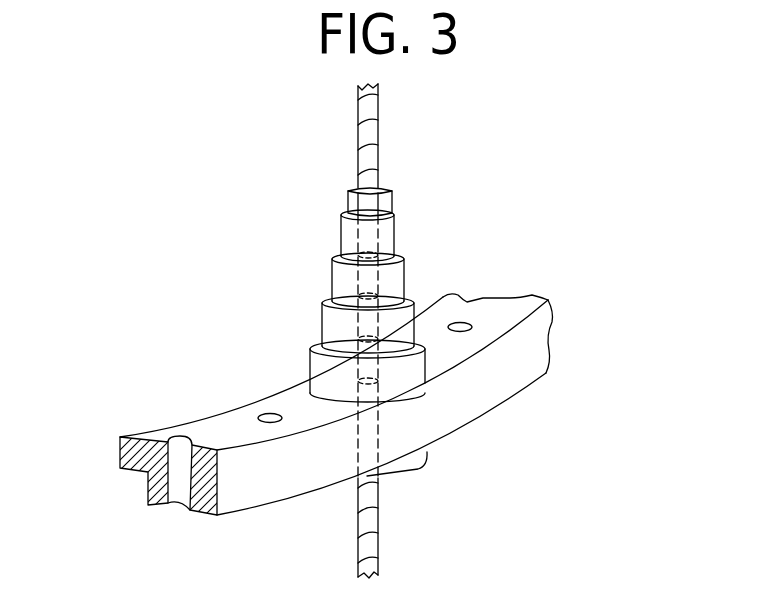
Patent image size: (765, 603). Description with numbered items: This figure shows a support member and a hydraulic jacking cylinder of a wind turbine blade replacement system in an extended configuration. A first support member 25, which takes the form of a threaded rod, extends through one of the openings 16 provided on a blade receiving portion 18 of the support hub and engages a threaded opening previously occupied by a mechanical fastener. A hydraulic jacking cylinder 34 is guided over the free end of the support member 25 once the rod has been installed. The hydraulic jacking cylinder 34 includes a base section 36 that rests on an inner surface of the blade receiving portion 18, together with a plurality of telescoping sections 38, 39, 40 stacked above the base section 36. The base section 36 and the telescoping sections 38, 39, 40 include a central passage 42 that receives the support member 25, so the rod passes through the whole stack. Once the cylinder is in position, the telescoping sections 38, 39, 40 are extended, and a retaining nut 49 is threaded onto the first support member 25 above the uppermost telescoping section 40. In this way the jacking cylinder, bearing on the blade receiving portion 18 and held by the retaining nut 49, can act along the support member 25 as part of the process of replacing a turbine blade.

The opening 16 is at (265, 417).
The blade receiving portion 18 is at (484, 440).
The first support member 25 is at (320, 552).
The hydraulic jacking cylinder 34 is at (203, 274).
The base section 36 is at (317, 370).
The telescoping section 38 is at (330, 318).
The telescoping section 39 is at (342, 277).
The telescoping section 40 is at (388, 230).
The central passage 42 is at (400, 467).
The retaining nut 49 is at (350, 197).